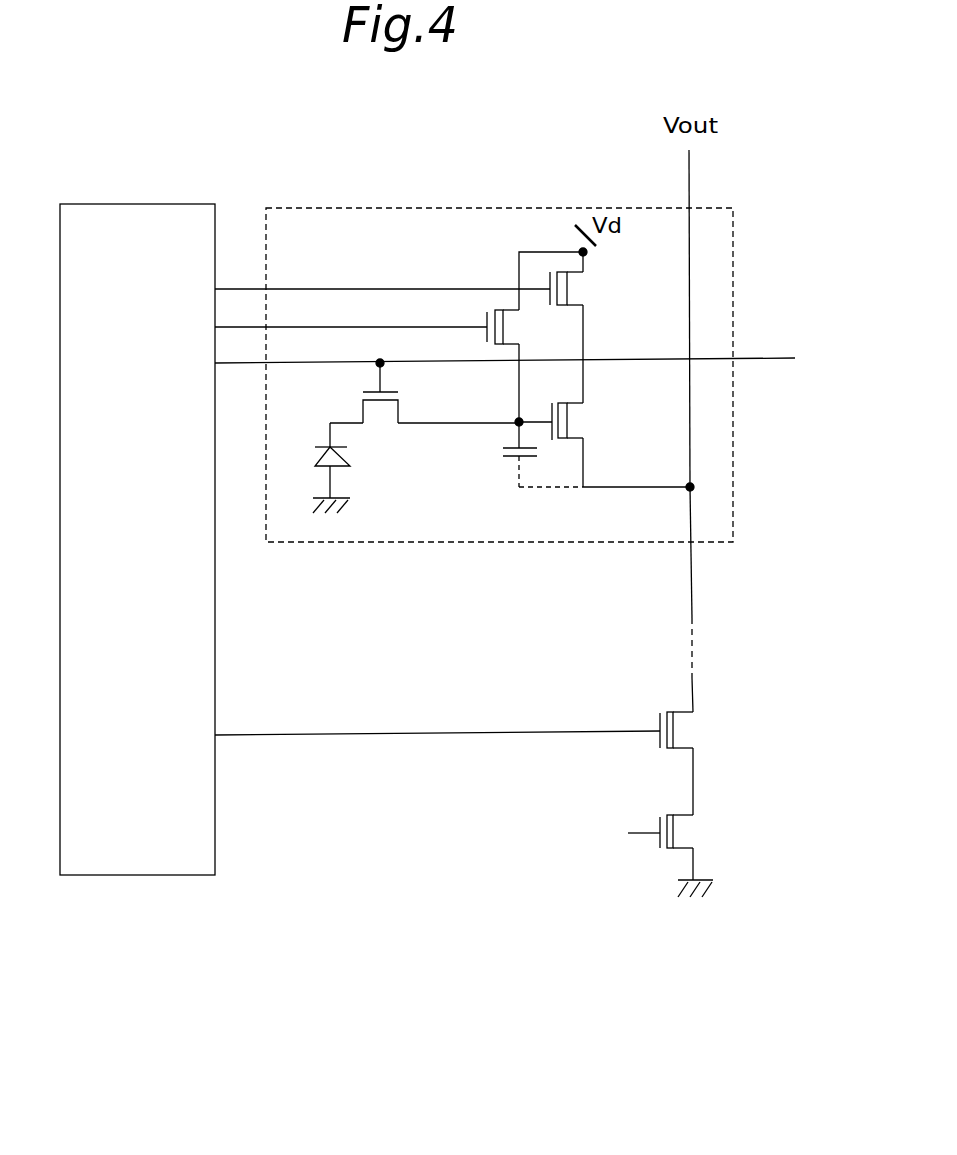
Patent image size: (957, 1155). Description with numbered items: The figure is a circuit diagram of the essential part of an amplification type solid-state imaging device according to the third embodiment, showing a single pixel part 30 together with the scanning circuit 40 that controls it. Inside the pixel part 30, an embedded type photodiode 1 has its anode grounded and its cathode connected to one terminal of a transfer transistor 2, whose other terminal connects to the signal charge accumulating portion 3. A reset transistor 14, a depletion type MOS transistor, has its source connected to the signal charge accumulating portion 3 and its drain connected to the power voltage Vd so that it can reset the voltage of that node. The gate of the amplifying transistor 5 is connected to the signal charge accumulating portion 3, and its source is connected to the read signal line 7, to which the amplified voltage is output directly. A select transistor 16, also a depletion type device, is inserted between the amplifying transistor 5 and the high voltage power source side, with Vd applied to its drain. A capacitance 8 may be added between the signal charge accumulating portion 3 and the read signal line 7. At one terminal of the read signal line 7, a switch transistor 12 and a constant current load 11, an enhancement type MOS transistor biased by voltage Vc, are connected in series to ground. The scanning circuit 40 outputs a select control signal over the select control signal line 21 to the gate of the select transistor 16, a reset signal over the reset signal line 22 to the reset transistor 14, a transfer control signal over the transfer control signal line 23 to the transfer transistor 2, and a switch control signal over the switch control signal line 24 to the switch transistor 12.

The embedded type photodiode 1 is at (320, 442).
The transfer transistor 2 is at (377, 410).
The signal charge accumulating portion 3 is at (515, 420).
The amplifying transistor 5 is at (570, 422).
The read signal line 7 is at (692, 567).
The capacitance 8 is at (503, 463).
The constant current load 11 is at (690, 831).
The switch transistor 12 is at (685, 729).
The reset transistor 14 is at (505, 327).
The select transistor 16 is at (570, 288).
The select control signal line 21 is at (412, 288).
The reset signal line 22 is at (388, 325).
The transfer control signal line 23 is at (765, 358).
The switch control signal line 24 is at (438, 733).
The pixel part 30 is at (483, 208).
The scanning circuit 40 is at (140, 875).